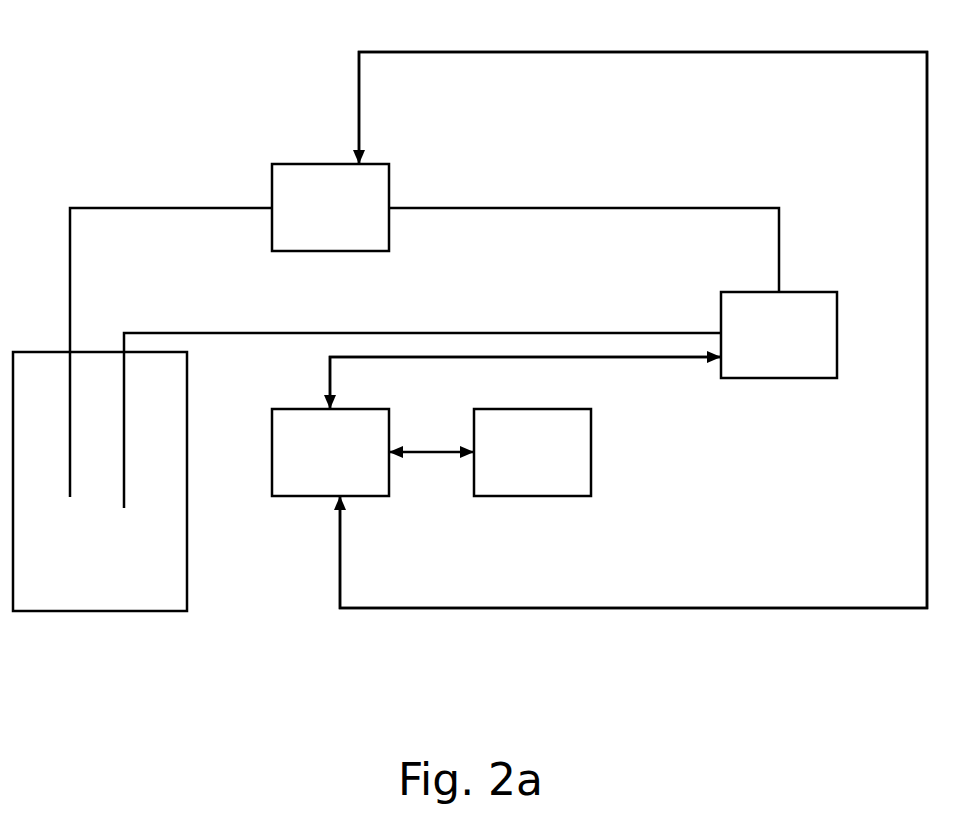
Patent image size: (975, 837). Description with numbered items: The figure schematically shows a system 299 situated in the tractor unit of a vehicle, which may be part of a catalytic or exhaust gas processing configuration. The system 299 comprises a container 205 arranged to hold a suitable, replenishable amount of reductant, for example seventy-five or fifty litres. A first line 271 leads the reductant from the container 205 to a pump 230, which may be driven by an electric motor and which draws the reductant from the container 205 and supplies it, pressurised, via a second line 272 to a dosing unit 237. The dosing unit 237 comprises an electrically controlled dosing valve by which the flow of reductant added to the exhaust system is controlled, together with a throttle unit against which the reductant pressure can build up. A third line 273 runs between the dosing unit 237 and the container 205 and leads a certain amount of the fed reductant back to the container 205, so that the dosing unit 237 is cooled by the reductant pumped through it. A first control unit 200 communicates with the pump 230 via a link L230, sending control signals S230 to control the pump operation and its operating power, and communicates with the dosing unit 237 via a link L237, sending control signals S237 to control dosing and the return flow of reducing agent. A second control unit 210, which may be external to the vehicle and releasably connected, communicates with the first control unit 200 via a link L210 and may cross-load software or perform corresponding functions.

The system 299 is at (258, 95).
The container 205 is at (40, 611).
The first line 271 is at (126, 208).
The second line 272 is at (527, 208).
The third line 273 is at (565, 333).
The pump 230 is at (309, 219).
The dosing unit 237 is at (757, 347).
The first control unit 200 is at (309, 466).
The second control unit 210 is at (512, 466).
The control signals S237 is at (522, 380).
The link L237 is at (637, 357).
The link L210 is at (427, 452).
The control signals S230 is at (630, 351).
The link L230 is at (632, 608).